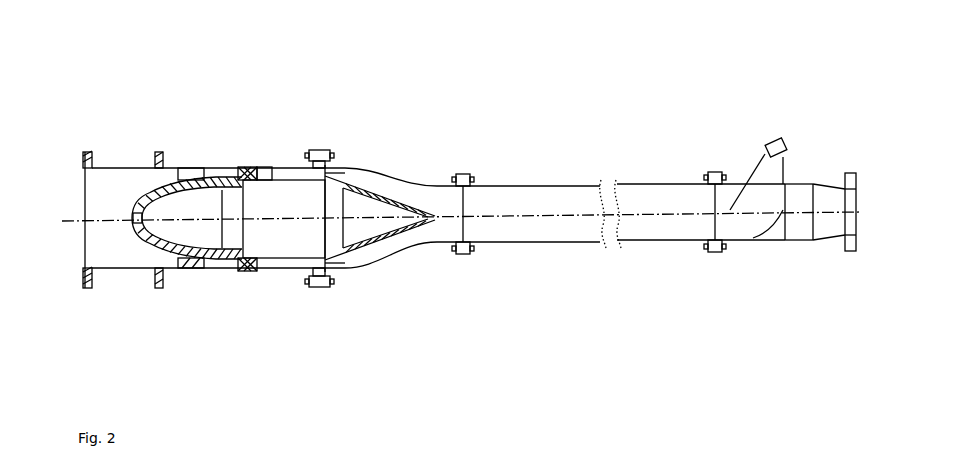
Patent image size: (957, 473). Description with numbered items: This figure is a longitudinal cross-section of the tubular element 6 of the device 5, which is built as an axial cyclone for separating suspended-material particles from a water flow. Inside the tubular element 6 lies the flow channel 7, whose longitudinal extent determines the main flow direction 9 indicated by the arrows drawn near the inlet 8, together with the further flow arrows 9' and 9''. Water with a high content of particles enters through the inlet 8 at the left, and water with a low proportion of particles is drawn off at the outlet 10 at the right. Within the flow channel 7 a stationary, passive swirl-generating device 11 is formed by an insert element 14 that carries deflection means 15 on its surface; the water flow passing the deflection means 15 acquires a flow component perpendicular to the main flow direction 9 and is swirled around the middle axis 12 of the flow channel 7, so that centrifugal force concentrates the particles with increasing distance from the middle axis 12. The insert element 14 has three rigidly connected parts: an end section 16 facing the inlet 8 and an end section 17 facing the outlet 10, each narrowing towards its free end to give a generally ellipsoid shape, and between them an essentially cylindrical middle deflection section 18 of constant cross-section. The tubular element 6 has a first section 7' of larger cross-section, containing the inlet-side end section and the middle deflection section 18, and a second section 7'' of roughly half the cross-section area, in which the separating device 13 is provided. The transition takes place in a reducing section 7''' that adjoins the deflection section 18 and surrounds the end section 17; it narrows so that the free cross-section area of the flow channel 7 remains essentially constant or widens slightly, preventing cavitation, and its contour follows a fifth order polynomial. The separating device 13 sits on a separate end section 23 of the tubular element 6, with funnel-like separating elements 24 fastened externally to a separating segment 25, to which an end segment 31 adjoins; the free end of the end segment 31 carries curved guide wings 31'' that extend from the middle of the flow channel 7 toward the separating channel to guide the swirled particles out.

The device 5 is at (102, 76).
The tubular element 6 is at (96, 131).
The flow channel 7 is at (197, 220).
The first section 7' is at (184, 183).
The second section 7'' is at (576, 181).
The reducing section 7''' is at (375, 192).
The inlet 8 is at (90, 273).
The main flow direction 9 is at (109, 186).
The flow direction 9' is at (109, 206).
The flow direction 9'' is at (109, 222).
The outlet 10 is at (847, 230).
The swirl-generating device 11 is at (349, 167).
The middle axis 12 is at (77, 220).
The separating device 13 is at (788, 161).
The insert element 14 is at (185, 264).
The deflection means 15 is at (266, 167).
The end section 16 is at (213, 180).
The end section 17 is at (373, 243).
The middle deflection section 18 is at (305, 246).
The end section 23 is at (827, 241).
The separating element 24 is at (777, 138).
The separating segment 25 is at (730, 240).
The end segment 31 is at (810, 190).
The guide wings 31'' is at (769, 249).